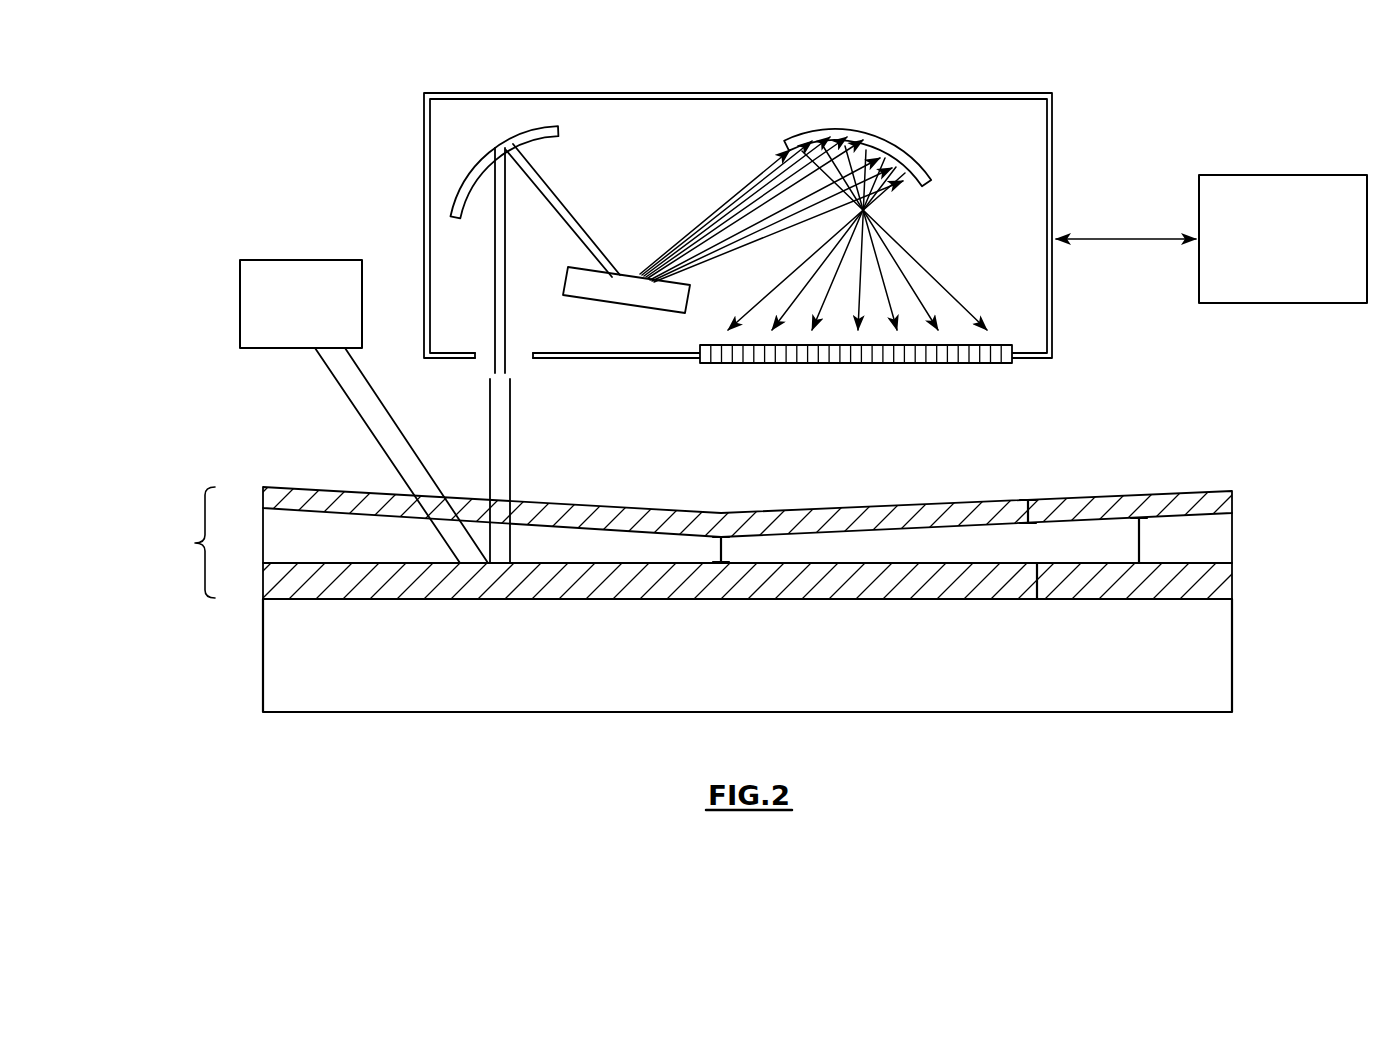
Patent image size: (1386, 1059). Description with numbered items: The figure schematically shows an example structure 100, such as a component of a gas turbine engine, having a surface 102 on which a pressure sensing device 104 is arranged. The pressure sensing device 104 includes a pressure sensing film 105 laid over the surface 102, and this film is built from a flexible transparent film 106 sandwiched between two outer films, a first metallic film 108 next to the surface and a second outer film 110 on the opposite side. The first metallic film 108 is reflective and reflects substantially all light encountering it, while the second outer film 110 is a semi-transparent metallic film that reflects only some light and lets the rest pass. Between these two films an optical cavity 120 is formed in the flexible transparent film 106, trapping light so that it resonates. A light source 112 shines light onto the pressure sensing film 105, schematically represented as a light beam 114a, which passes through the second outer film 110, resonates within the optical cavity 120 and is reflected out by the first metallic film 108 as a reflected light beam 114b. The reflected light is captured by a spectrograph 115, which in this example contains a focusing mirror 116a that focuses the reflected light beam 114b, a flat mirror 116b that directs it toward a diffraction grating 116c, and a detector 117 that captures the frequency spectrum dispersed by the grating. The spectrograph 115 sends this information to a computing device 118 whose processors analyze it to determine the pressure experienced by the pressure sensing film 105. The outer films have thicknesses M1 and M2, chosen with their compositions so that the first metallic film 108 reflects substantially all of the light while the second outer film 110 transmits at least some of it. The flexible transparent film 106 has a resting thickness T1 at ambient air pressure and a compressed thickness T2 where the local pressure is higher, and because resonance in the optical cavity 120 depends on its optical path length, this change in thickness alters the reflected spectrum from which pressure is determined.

The structure 100 is at (323, 697).
The surface 102 is at (303, 600).
The pressure sensing device 104 is at (214, 194).
The pressure sensing film 105 is at (181, 542).
The flexible transparent film 106 is at (1215, 540).
The first metallic film 108 is at (1236, 580).
The second outer film 110 is at (1236, 498).
The light source 112 is at (325, 318).
The light beam 114a is at (358, 402).
The reflected light beam 114b is at (512, 445).
The spectrograph 115 is at (1064, 72).
The focusing mirror 116a is at (467, 170).
The flat mirror 116b is at (630, 290).
The diffraction grating 116c is at (920, 162).
The detector 117 is at (978, 366).
The computing device 118 is at (1309, 253).
The optical cavity 120 is at (246, 530).
The thickness of first metallic film M1 is at (1040, 586).
The thickness of second metallic film M2 is at (1028, 510).
The resting thickness T1 is at (1139, 545).
The compressed thickness T2 is at (724, 553).